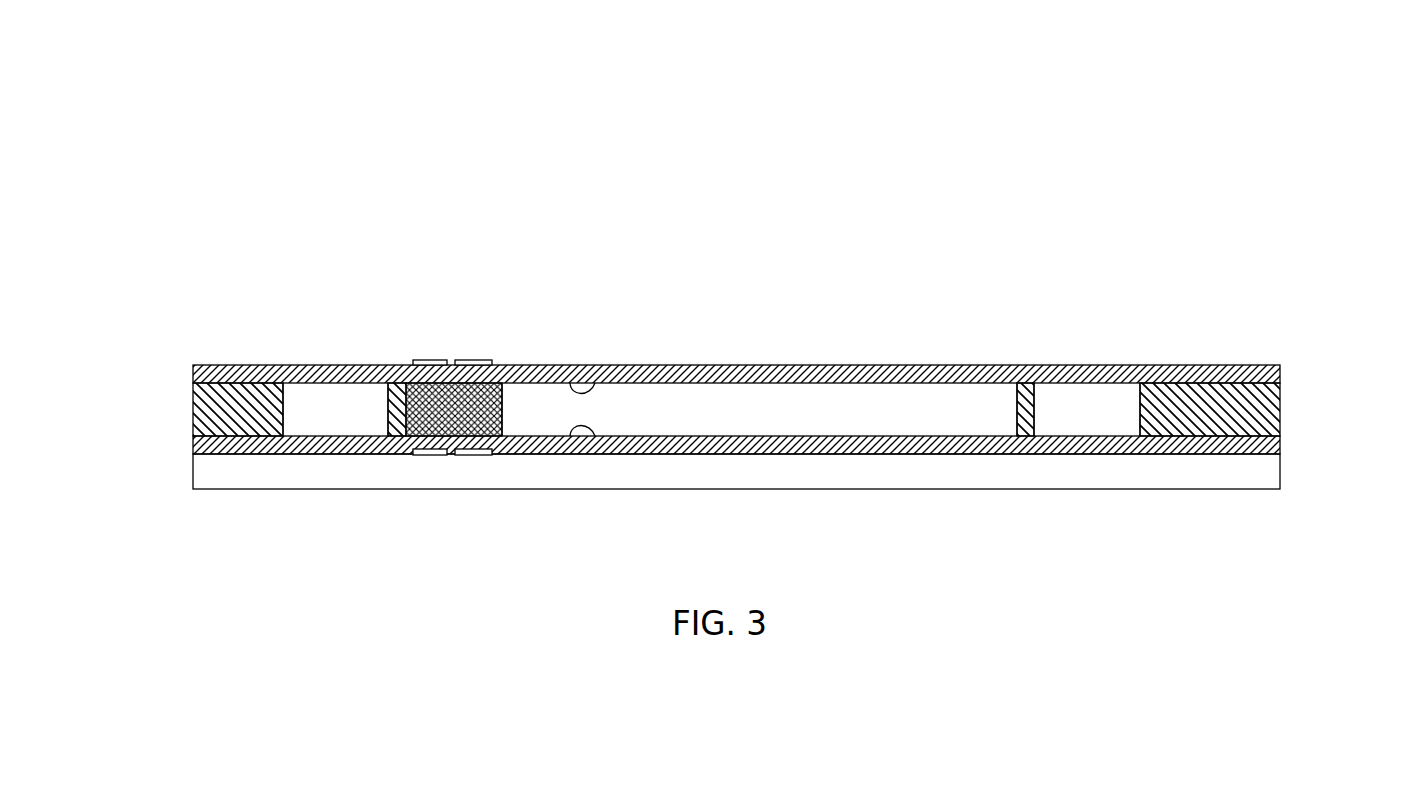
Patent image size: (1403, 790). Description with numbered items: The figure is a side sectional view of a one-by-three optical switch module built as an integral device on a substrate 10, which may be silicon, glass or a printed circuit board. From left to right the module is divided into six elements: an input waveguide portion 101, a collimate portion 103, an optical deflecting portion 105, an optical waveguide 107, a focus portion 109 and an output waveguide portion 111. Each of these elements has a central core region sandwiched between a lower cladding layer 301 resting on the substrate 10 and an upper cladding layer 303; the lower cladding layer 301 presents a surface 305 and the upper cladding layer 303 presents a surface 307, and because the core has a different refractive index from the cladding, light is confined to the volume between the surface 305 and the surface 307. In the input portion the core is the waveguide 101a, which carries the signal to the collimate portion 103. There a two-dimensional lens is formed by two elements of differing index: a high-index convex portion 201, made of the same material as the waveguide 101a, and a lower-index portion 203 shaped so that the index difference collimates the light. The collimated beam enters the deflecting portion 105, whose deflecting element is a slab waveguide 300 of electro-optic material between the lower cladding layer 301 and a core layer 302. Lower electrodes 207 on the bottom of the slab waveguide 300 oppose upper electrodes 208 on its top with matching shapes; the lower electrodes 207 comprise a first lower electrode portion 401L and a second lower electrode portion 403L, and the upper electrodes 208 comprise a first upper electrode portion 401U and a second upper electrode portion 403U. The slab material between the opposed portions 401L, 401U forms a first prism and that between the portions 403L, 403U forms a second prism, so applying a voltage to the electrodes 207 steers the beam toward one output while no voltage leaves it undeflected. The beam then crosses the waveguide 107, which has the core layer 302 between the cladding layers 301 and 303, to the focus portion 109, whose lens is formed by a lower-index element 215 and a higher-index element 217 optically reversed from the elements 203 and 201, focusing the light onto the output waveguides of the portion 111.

The substrate 10 is at (227, 489).
The input optical waveguide portion 101 is at (229, 226).
The collimate portion 103 is at (334, 226).
The optical deflecting portion 105 is at (431, 152).
The optical waveguide 107 is at (823, 226).
The focus portion 109 is at (1078, 226).
The output waveguide portion 111 is at (1245, 226).
The waveguide 101a is at (193, 410).
The high refractive index lens portion 201 is at (318, 437).
The lower refractive index lens portion 203 is at (396, 384).
The lower electrodes 207 is at (357, 622).
The upper electrodes 208 is at (455, 242).
The lower refractive index lens element 215 is at (1027, 383).
The higher refractive index lens element 217 is at (1068, 436).
The slab waveguide 300 is at (503, 397).
The lower cladding layer 301 is at (650, 454).
The core layer 302 is at (877, 383).
The upper cladding layer 303 is at (650, 365).
The surface of lower cladding layer 305 is at (570, 436).
The surface of upper cladding layer 307 is at (570, 383).
The first upper electrode portion 401U is at (438, 361).
The second upper electrode portion 403U is at (477, 361).
The first lower electrode portion 401L is at (433, 456).
The second lower electrode portion 403L is at (477, 456).